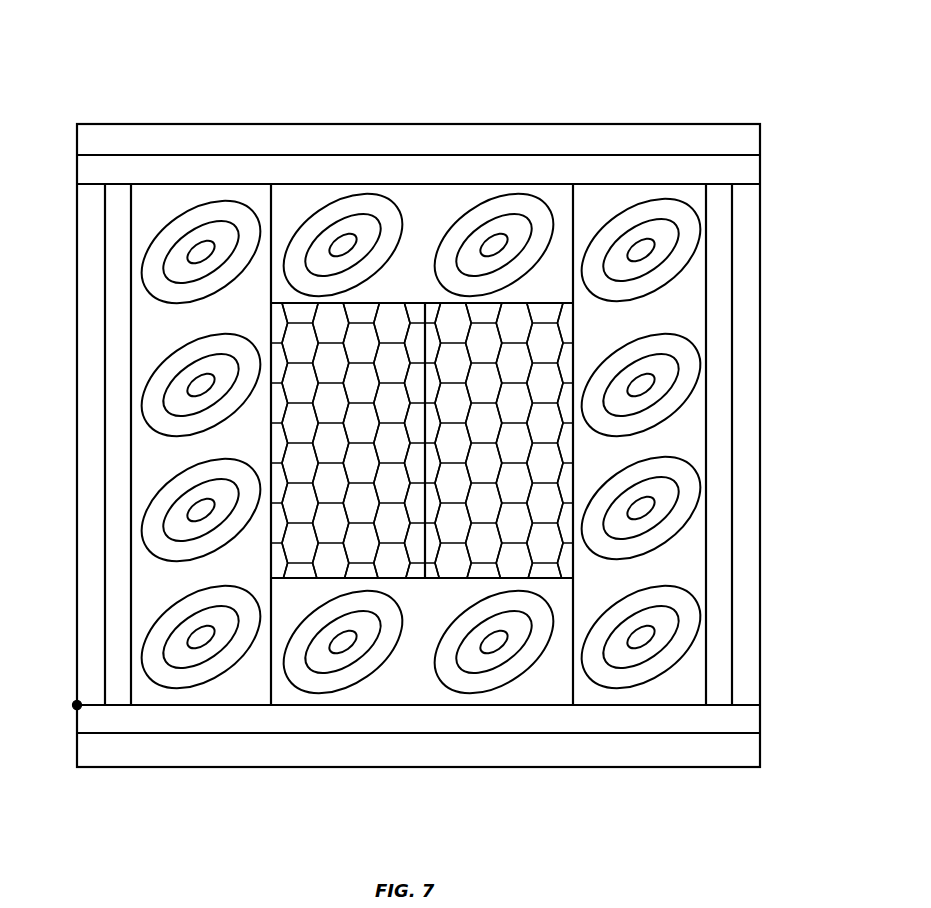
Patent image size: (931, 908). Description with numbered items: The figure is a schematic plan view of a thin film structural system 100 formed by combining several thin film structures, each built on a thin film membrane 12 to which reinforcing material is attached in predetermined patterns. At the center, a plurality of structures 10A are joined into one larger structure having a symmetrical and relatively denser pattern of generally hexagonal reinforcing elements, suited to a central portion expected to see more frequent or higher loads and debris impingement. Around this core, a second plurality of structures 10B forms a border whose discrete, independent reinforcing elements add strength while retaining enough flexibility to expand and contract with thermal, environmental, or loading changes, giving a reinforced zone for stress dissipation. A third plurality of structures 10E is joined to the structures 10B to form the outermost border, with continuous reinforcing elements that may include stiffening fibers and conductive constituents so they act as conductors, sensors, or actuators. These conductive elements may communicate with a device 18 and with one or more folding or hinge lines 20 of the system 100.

The structural system 100 is at (461, 52).
The membrane 12 is at (752, 133).
The third plurality of structures 10E is at (603, 124).
The second plurality of structures 10B is at (303, 184).
The folding or hinge lines 20 is at (268, 688).
The first plurality of structures 10A is at (268, 428).
The device 18 is at (77, 706).